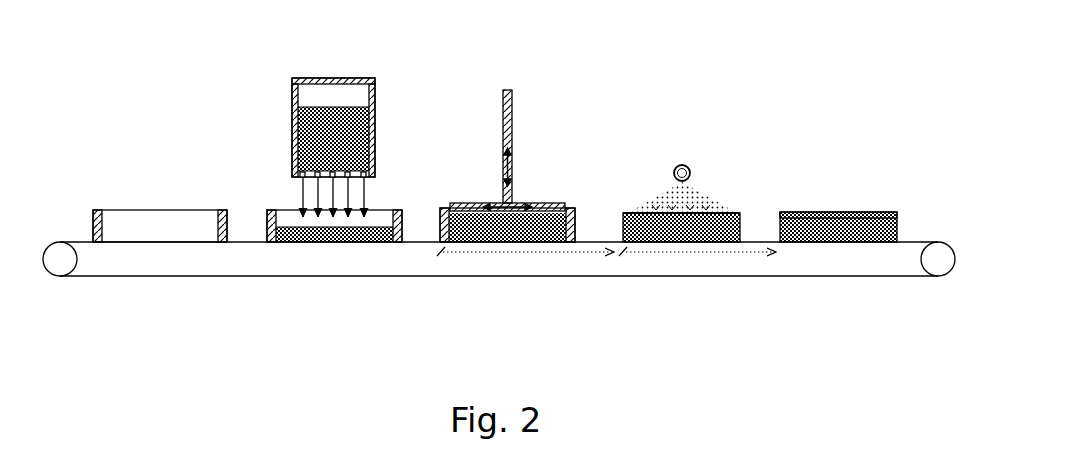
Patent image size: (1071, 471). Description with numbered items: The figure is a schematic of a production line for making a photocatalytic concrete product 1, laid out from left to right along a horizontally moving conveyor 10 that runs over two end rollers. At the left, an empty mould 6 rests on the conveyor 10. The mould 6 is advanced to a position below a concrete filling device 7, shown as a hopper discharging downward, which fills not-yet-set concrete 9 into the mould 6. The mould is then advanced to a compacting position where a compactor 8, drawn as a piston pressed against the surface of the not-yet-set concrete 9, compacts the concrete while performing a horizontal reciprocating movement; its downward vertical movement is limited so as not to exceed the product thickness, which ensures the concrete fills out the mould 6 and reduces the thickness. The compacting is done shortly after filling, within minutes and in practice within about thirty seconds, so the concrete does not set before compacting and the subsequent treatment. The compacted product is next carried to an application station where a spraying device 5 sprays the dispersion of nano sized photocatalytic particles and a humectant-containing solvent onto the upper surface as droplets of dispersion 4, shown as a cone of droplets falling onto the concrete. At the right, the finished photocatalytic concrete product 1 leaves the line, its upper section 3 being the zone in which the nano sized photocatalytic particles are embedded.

The photocatalytic concrete product 1 is at (809, 205).
The section of photocatalytic concrete product 3 is at (855, 210).
The droplets of dispersion 4 is at (646, 198).
The spraying device 5 is at (689, 168).
The mould 6 is at (89, 208).
The concrete filling device 7 is at (385, 106).
The compactor 8 is at (516, 163).
The not-yet-set concrete 9 is at (306, 235).
The conveyor 10 is at (556, 290).